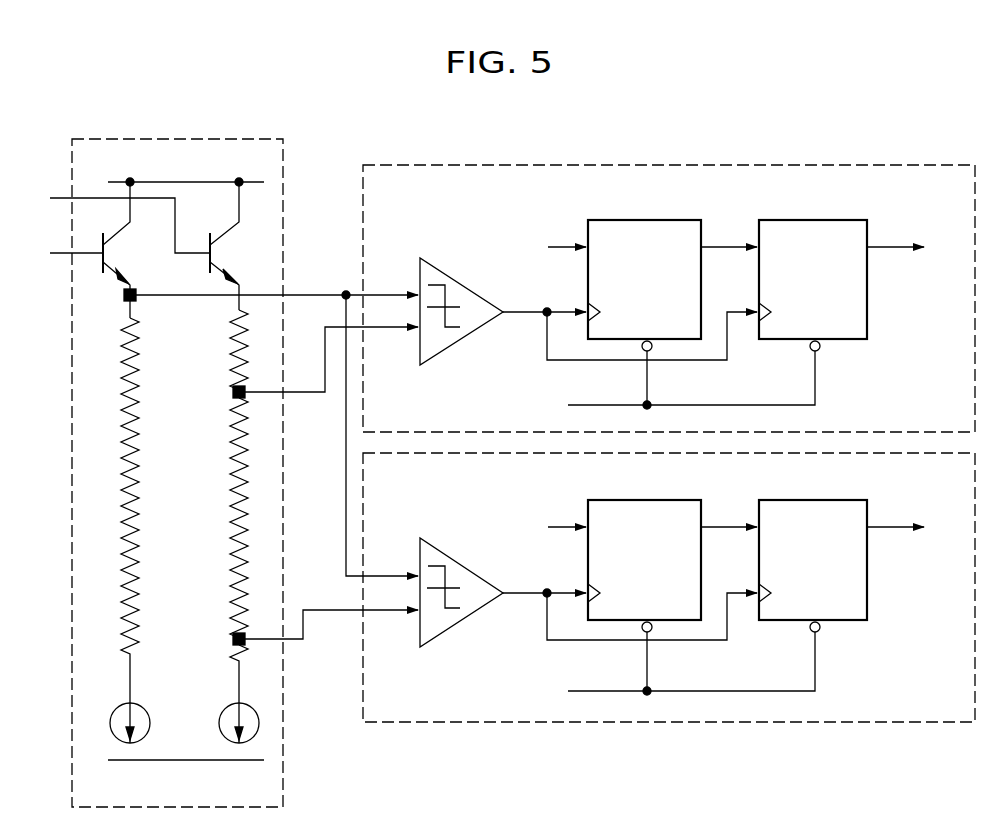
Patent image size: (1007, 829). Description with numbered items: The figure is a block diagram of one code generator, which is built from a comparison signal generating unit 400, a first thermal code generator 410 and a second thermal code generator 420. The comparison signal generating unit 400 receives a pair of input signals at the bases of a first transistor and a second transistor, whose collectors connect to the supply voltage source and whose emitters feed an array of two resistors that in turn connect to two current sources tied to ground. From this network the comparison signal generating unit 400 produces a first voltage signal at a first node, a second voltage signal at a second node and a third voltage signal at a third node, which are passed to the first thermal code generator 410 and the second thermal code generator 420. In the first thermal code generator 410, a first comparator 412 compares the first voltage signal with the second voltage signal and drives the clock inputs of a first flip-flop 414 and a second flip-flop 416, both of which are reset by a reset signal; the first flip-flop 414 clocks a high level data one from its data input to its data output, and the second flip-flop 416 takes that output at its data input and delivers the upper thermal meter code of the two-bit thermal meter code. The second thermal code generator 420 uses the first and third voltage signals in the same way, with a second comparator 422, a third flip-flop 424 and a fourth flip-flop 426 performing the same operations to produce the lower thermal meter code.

The comparison signal generating unit 400 is at (180, 137).
The first thermal code generator 410 is at (890, 163).
The first comparator 412 is at (465, 345).
The first flip-flop 414 is at (588, 227).
The second flip-flop 416 is at (867, 312).
The second thermal code generator 420 is at (915, 723).
The second comparator 422 is at (465, 627).
The third flip-flop 424 is at (588, 507).
The fourth flip-flop 426 is at (867, 593).